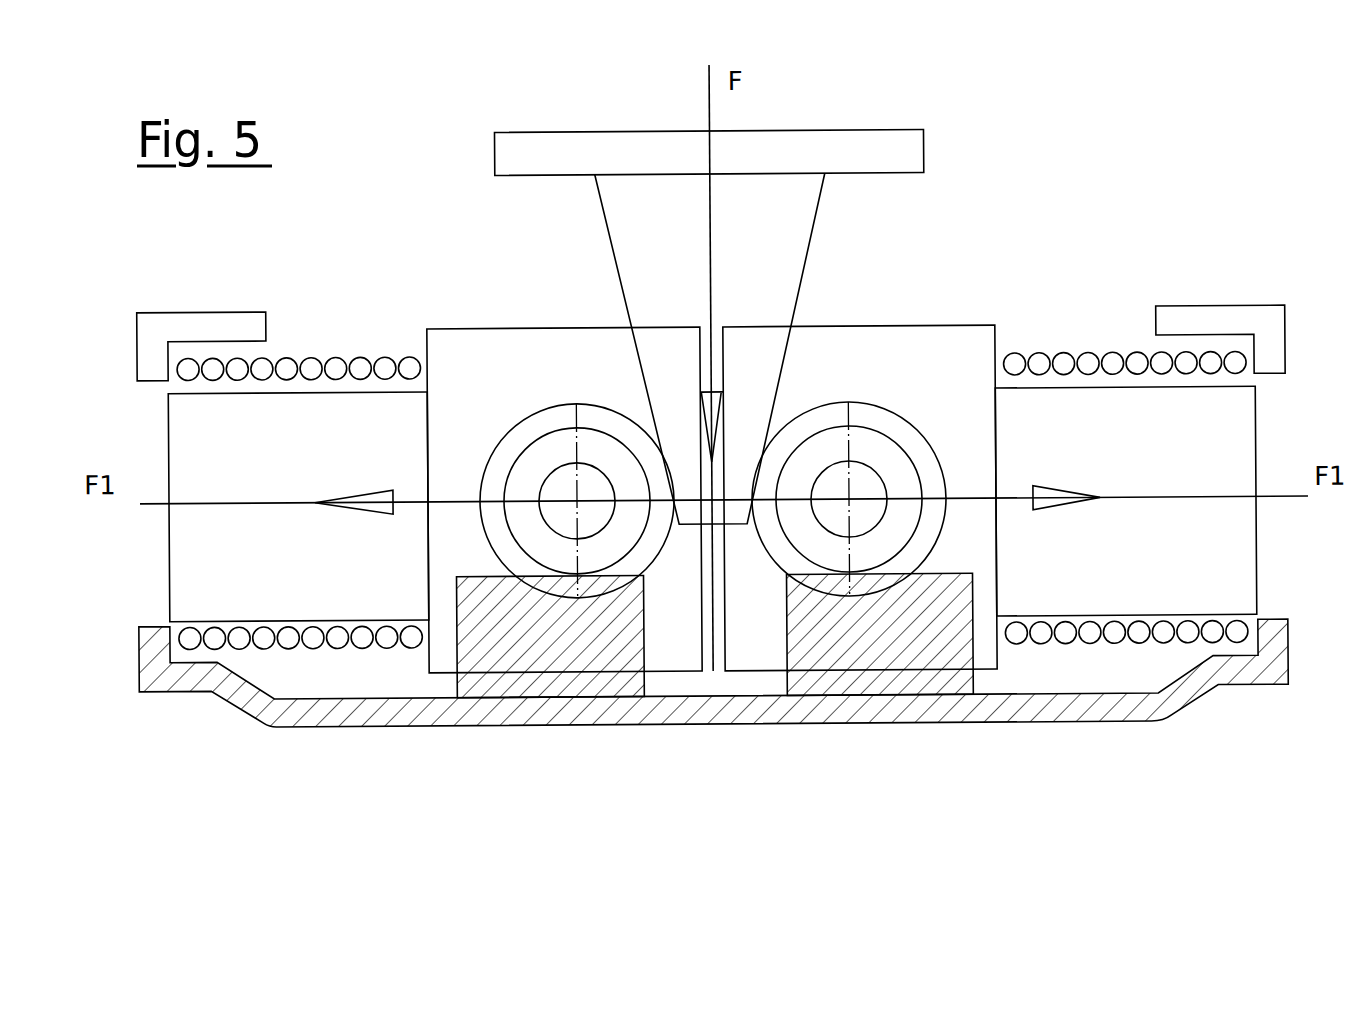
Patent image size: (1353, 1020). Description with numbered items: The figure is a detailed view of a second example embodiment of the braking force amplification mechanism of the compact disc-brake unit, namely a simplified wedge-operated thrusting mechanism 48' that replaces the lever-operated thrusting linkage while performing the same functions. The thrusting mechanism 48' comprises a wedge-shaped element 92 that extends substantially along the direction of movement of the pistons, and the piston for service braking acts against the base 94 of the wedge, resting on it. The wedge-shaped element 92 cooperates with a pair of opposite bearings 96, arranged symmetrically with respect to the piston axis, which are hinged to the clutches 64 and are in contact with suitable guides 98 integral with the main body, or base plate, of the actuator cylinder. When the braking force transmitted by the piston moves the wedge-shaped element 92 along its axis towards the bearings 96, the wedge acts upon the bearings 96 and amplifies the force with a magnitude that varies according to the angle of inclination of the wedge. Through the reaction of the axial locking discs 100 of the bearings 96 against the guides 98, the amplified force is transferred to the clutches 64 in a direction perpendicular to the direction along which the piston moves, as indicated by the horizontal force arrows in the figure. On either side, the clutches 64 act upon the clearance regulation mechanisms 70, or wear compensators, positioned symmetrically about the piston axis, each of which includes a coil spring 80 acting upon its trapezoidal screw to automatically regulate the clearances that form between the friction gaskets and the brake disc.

The wedge-operated thrusting mechanism 48' is at (711, 409).
The clutch 64 is at (673, 645).
The clearance regulation mechanism 70 is at (295, 588).
The coil spring 80 is at (326, 340).
The wedge-shaped element 92 is at (782, 240).
The base 94 is at (888, 146).
The bearing 96 is at (568, 513).
The guide 98 is at (473, 687).
The axial locking disc 100 is at (597, 548).